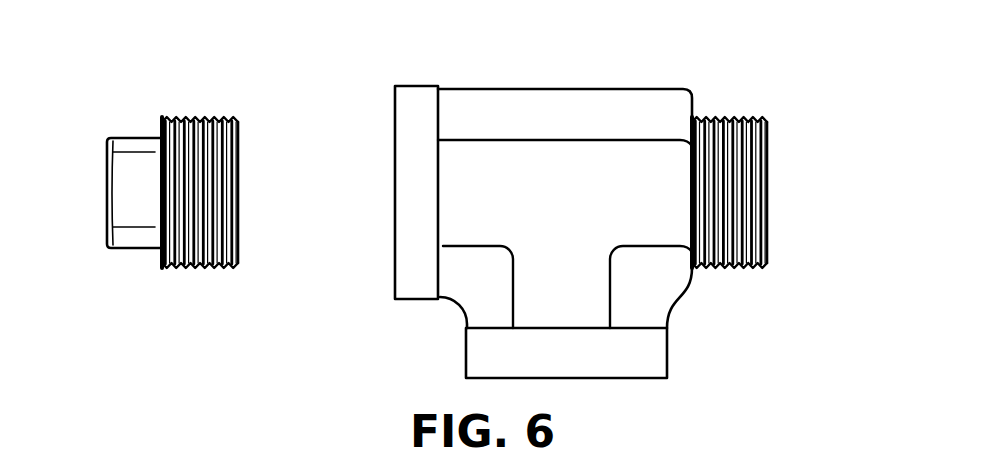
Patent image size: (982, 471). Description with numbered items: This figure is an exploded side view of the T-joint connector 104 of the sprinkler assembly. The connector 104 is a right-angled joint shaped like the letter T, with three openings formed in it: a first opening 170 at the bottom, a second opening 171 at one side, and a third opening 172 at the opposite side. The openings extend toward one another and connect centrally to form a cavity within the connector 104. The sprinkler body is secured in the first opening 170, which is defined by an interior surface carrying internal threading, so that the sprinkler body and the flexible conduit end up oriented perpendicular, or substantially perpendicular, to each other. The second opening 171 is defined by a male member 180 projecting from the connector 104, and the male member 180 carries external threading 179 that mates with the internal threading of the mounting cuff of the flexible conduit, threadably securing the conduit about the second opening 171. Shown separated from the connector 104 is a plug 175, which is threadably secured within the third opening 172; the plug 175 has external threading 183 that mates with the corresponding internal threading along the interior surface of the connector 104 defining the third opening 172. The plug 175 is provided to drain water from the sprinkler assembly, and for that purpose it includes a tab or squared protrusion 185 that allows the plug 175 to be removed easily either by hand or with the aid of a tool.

The connector 104 is at (585, 233).
The first opening 170 is at (572, 377).
The second opening 171 is at (770, 180).
The third opening 172 is at (365, 192).
The plug 175 is at (160, 152).
The external threading 179 is at (732, 117).
The male member 180 is at (766, 121).
The external threading 183 is at (213, 117).
The squared protrusion 185 is at (135, 143).